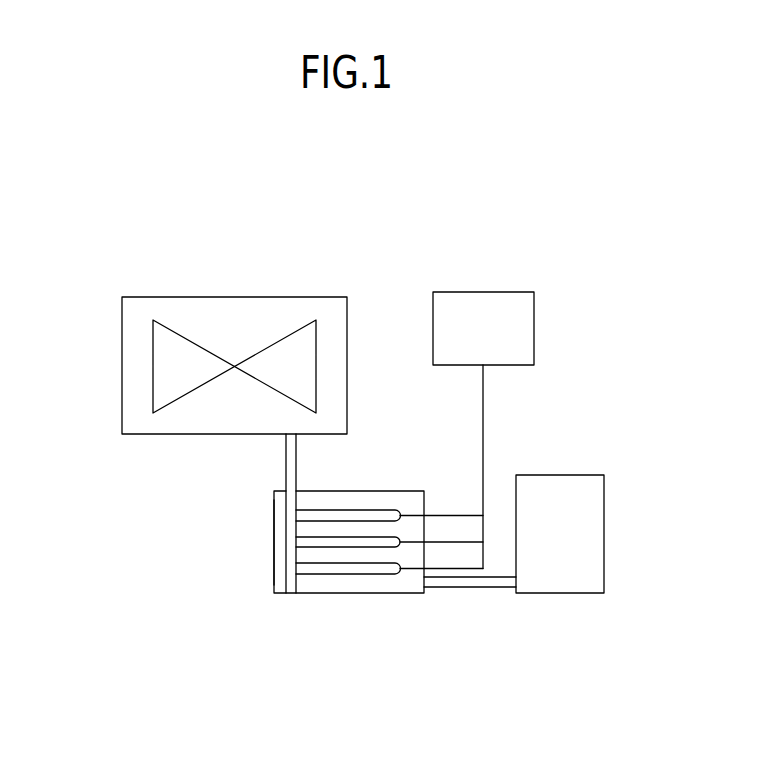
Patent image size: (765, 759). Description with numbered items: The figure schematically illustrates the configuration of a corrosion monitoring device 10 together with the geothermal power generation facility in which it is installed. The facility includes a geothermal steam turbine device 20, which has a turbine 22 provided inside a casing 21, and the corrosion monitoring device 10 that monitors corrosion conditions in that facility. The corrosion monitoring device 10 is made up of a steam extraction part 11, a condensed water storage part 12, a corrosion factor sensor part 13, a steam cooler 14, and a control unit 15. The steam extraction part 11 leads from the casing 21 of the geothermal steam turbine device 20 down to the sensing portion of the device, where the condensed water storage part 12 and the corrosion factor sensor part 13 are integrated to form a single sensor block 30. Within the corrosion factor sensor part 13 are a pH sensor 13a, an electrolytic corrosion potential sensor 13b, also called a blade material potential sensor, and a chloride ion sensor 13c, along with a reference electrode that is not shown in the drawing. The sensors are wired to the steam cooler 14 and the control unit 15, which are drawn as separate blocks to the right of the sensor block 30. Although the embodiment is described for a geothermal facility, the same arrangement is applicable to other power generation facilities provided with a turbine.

The corrosion monitoring device 10 is at (598, 267).
The steam extraction part 11 is at (297, 463).
The condensed water storage part 12 is at (292, 597).
The corrosion factor sensor part 13 is at (317, 605).
The pH sensor 13a is at (386, 516).
The electrolytic corrosion potential sensor 13b is at (388, 545).
The chloride ion sensor 13c is at (347, 568).
The steam cooler 14 is at (597, 518).
The control unit 15 is at (522, 327).
The geothermal steam turbine device 20 is at (225, 270).
The casing 21 is at (122, 352).
The turbine 22 is at (175, 332).
The sensor block 30 is at (263, 523).